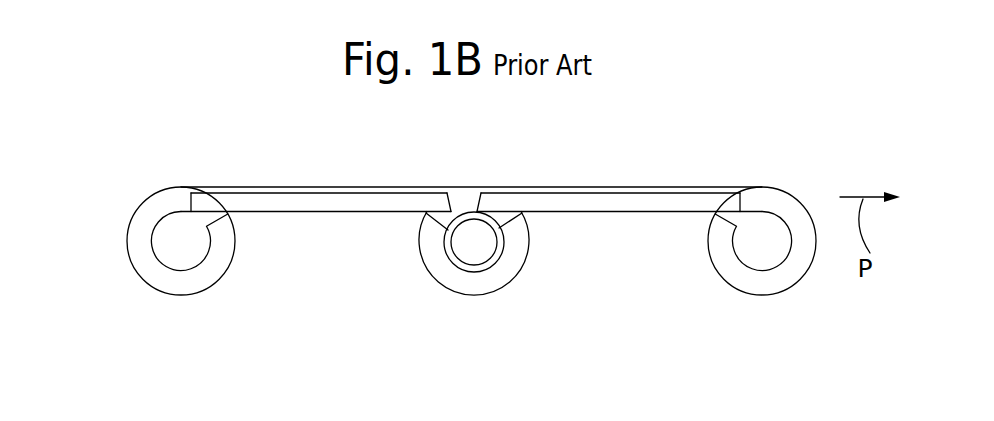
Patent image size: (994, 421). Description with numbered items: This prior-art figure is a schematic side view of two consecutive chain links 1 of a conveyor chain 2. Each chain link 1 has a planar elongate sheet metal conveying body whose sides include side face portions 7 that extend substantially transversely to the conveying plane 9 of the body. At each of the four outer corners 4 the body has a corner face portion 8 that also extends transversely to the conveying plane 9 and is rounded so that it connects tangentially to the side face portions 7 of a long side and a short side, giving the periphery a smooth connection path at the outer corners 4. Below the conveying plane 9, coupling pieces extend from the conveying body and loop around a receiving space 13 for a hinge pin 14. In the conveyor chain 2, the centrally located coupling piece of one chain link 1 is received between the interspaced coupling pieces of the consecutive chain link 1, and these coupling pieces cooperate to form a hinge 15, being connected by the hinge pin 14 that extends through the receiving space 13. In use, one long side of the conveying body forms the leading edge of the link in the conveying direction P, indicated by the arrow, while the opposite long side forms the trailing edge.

The chain link 1 is at (131, 257).
The conveyor chain 2 is at (145, 307).
The outer corner 4 is at (202, 187).
The side face portion 7 is at (190, 207).
The corner face portion 8 is at (741, 195).
The conveying plane 9 is at (283, 187).
The receiving space 13 is at (185, 240).
The hinge pin 14 is at (472, 252).
The hinge 15 is at (497, 275).